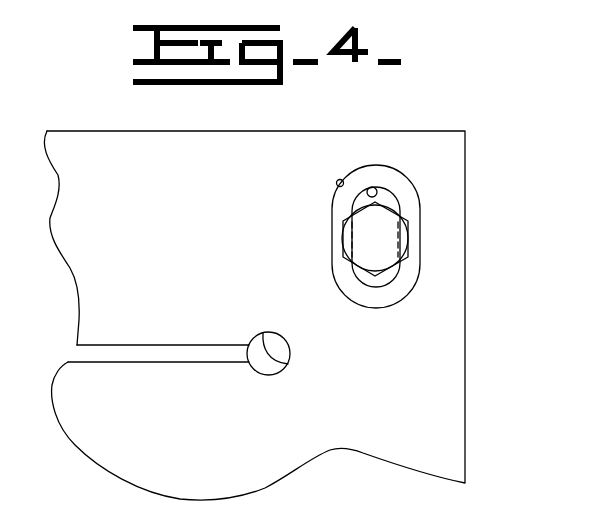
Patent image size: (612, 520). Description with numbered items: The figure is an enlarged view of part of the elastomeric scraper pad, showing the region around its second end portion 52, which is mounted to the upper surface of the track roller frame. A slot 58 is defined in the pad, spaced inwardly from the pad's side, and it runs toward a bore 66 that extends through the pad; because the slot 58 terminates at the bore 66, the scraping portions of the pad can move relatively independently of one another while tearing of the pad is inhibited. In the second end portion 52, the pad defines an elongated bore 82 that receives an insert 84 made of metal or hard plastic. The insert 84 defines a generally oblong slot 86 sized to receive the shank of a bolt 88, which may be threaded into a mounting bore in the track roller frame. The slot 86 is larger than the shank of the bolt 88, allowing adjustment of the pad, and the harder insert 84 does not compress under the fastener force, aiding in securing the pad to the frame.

The second end portion 52 is at (430, 373).
The slot 58 is at (158, 355).
The bore 66 is at (288, 365).
The elongated bore 82 is at (337, 184).
The insert 84 is at (413, 210).
The oblong slot 86 is at (374, 193).
The bolt 88 is at (374, 236).